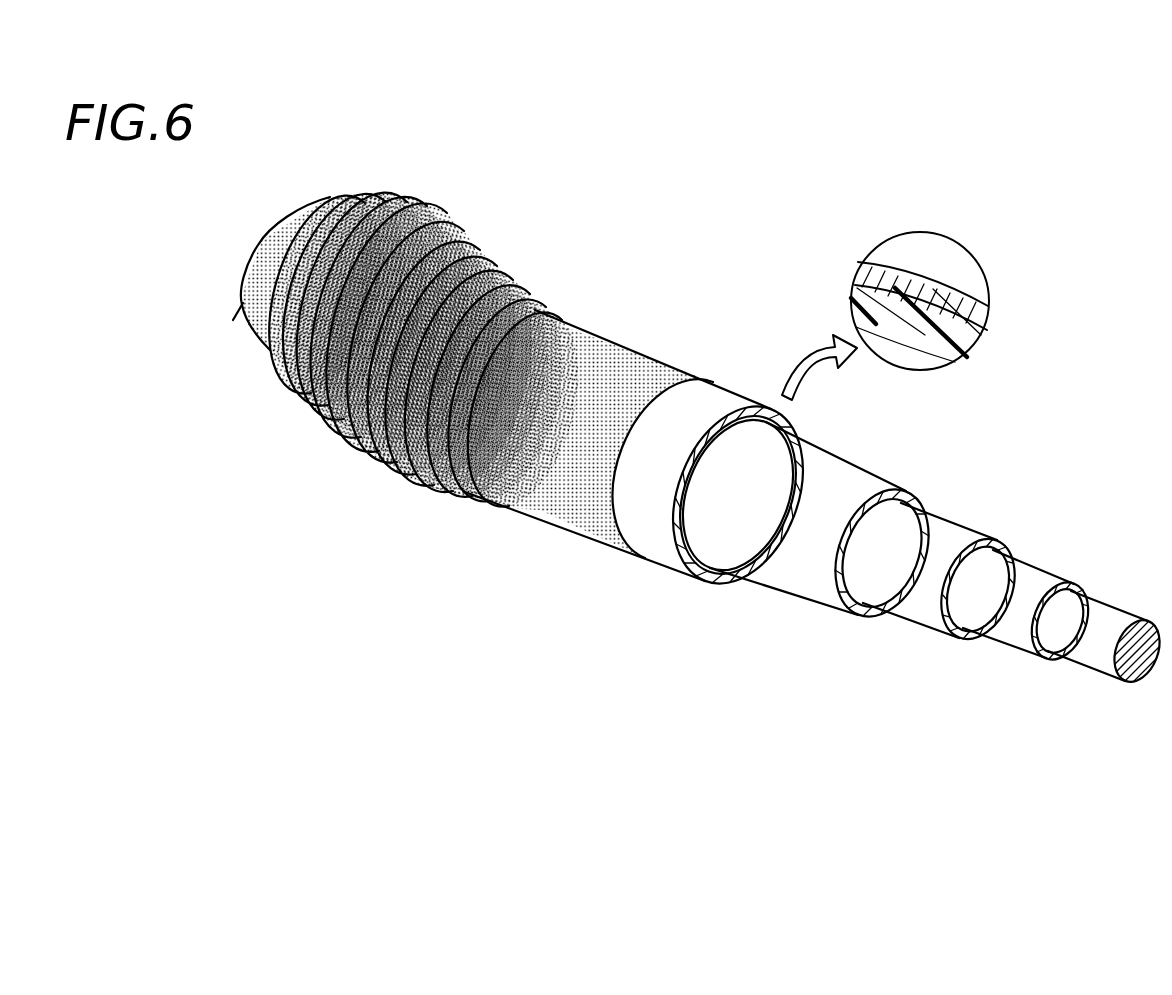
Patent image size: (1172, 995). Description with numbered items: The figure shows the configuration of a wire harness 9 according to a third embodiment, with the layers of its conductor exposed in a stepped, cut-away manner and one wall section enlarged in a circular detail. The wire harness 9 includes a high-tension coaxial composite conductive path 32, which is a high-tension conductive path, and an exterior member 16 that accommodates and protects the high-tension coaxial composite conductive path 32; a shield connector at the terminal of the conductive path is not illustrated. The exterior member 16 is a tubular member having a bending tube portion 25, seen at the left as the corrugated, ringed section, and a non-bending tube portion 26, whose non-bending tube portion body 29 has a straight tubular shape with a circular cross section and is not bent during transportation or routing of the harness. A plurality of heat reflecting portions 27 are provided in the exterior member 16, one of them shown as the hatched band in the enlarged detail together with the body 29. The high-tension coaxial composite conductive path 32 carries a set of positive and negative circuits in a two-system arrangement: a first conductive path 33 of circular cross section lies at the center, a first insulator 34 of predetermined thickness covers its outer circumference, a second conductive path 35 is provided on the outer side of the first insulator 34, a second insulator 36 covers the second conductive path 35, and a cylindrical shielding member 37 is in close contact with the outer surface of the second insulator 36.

The wire harness 9 is at (943, 210).
The exterior member 16 is at (576, 258).
The bending tube portion 25 is at (262, 330).
The non-bending tube portion 26 is at (597, 358).
The heat reflecting portion 27 is at (713, 400).
The non-bending tube portion body 29 is at (527, 485).
The high-tension coaxial composite conductive path 32 is at (1050, 498).
The first conductive path 33 is at (1083, 645).
The first insulator 34 is at (1000, 620).
The second conductive path 35 is at (915, 598).
The second insulator 36 is at (822, 572).
The shielding member 37 is at (725, 540).